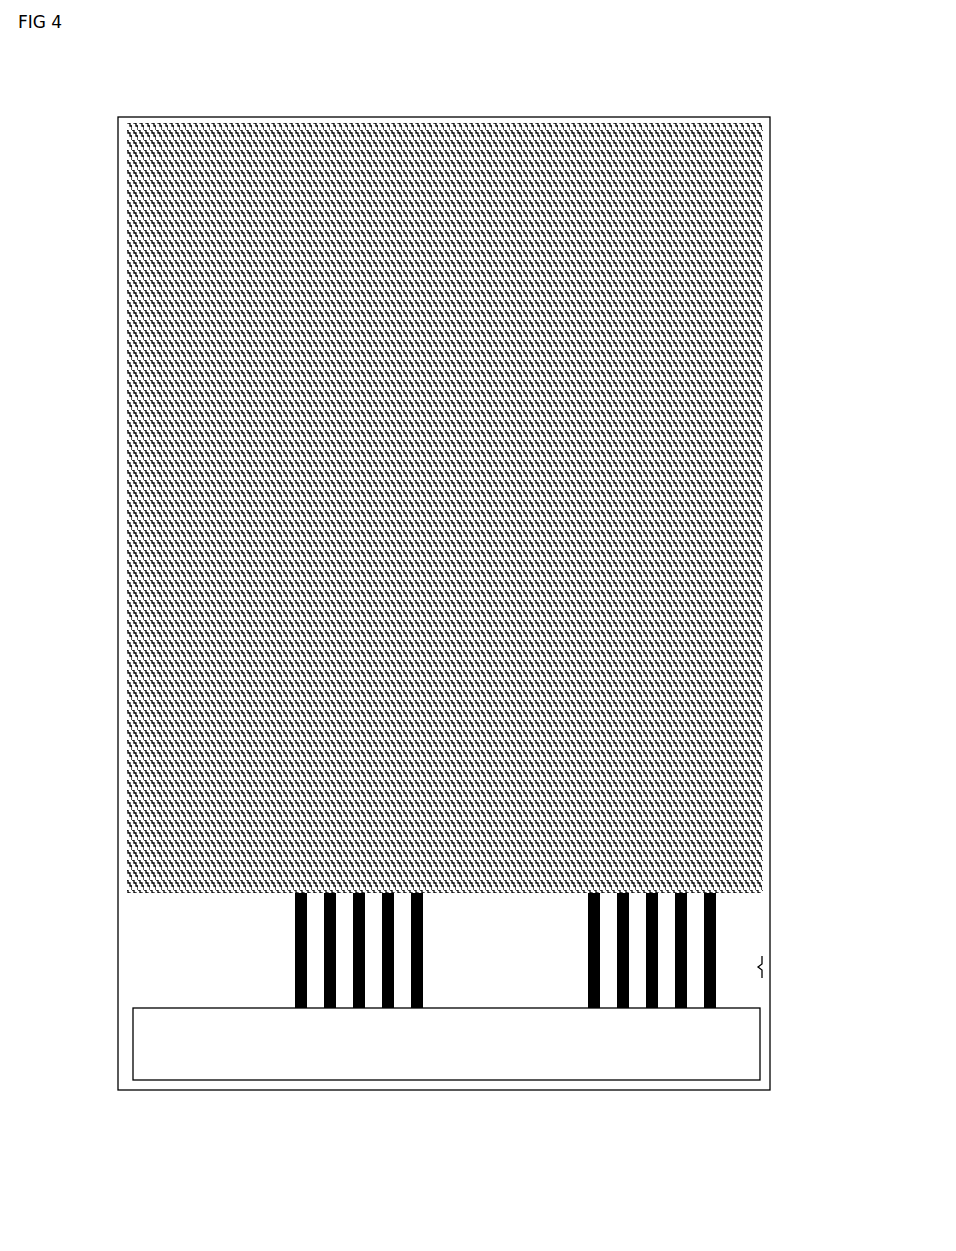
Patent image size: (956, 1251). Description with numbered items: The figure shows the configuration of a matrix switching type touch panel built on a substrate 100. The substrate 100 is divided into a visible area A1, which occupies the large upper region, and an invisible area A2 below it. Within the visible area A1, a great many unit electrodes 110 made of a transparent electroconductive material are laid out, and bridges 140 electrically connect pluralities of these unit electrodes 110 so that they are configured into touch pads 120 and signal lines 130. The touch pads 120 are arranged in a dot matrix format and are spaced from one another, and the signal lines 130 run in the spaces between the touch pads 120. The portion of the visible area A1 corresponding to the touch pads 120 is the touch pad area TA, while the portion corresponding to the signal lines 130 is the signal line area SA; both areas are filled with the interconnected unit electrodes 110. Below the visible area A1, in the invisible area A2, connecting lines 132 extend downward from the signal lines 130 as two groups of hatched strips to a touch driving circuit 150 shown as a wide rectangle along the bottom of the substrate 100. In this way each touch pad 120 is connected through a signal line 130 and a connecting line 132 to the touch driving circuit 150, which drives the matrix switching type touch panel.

The substrate 100 is at (770, 1068).
The unit electrode 110 is at (252, 133).
The touch pad 120 is at (230, 153).
The signal line 130 is at (760, 700).
The connecting line 132 is at (424, 930).
The bridge 140 is at (340, 135).
The touch driving circuit 150 is at (760, 1032).
The touch pad area TA is at (130, 187).
The signal line area SA is at (748, 620).
The visible area A1 is at (755, 765).
The invisible area A2 is at (765, 967).